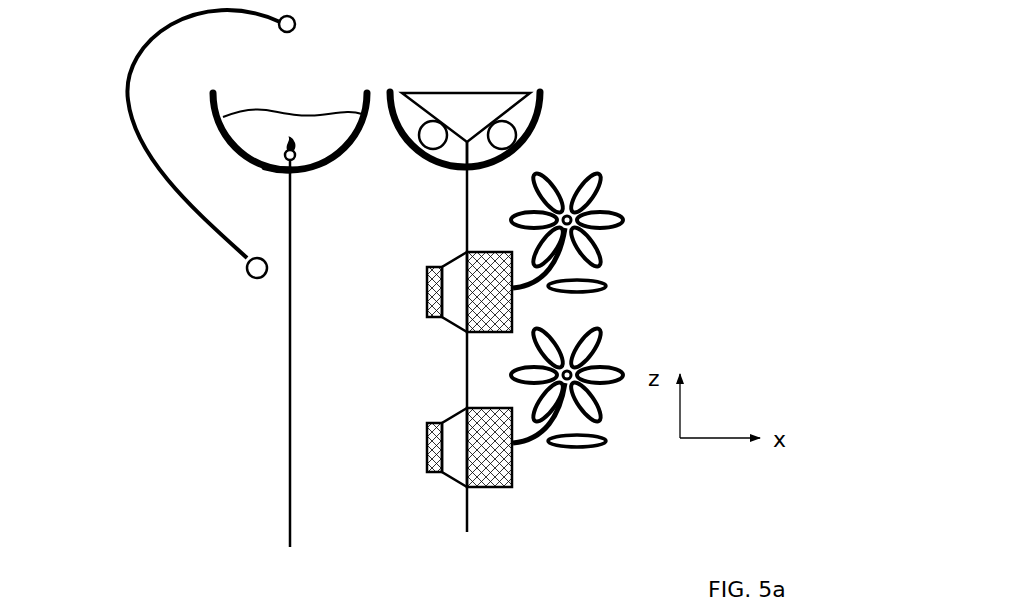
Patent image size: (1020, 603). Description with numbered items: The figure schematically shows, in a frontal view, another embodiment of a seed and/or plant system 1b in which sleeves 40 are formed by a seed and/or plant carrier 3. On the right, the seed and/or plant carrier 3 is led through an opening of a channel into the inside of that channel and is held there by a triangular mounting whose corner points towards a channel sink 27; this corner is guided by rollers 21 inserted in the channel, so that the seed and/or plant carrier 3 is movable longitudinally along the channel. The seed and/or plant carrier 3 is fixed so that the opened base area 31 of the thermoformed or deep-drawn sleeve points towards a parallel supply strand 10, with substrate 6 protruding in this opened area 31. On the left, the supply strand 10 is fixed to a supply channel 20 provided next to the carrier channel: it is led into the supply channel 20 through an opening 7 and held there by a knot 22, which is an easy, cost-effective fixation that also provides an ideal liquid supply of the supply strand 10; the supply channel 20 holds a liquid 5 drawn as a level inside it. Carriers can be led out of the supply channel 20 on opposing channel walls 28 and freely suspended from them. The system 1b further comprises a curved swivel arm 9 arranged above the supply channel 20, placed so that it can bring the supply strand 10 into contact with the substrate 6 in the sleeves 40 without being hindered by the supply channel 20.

The seed and/or plant system 1b is at (535, 67).
The seed and/or plant carrier 3 is at (553, 293).
The liquid 5 is at (260, 133).
The substrate 6 is at (488, 470).
The opening 7 is at (282, 174).
The swivel arm 9 is at (244, 282).
The supply strand 10 is at (290, 412).
The supply channel 20 is at (270, 167).
The rollers 21 is at (502, 137).
The knot 22 is at (270, 172).
The channel sink 27 is at (455, 156).
The channel wall 28 is at (540, 118).
The opened base area 31 is at (436, 453).
The sleeves 40 is at (458, 470).